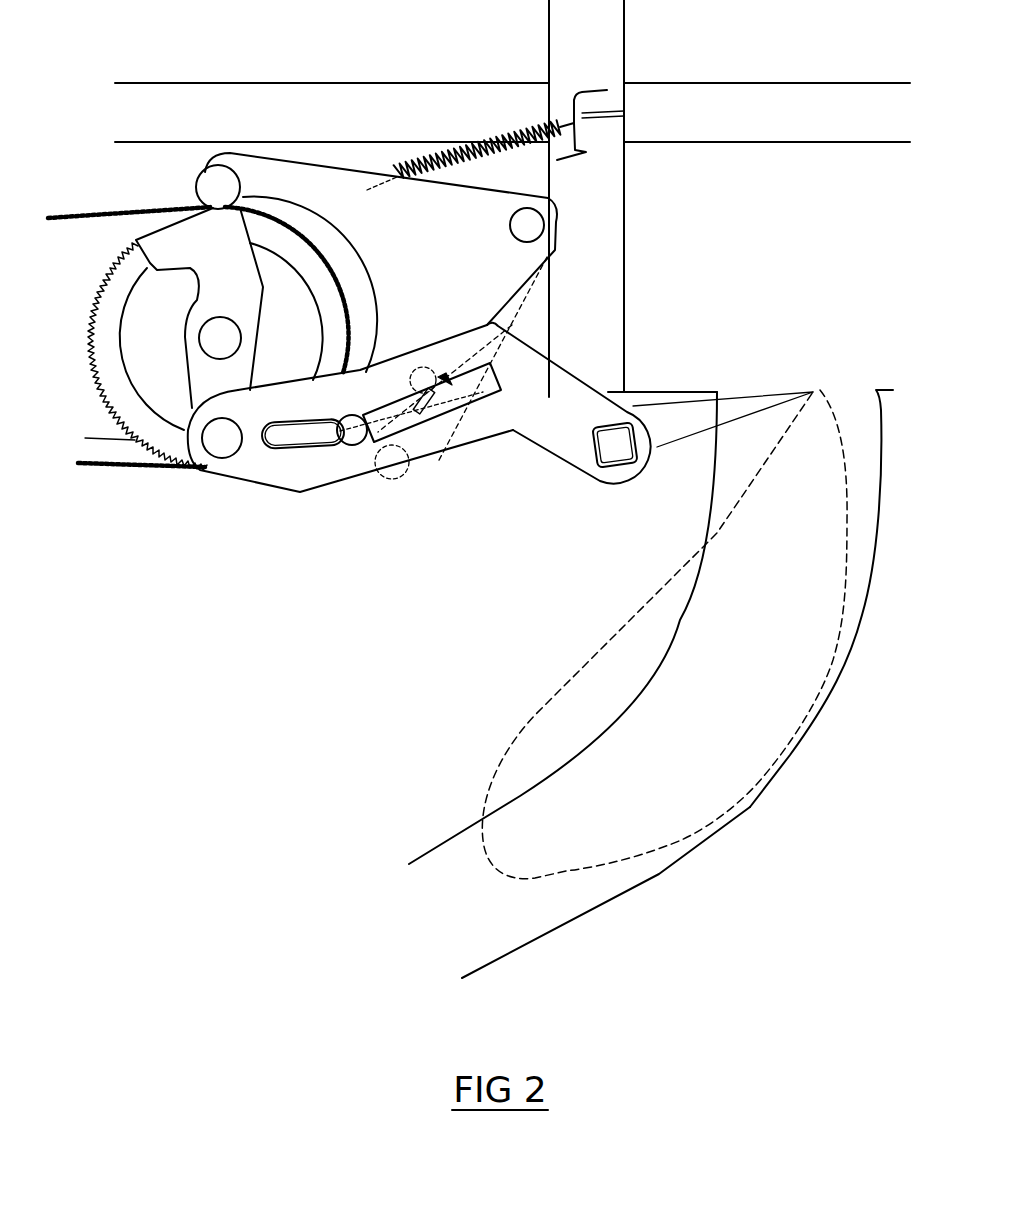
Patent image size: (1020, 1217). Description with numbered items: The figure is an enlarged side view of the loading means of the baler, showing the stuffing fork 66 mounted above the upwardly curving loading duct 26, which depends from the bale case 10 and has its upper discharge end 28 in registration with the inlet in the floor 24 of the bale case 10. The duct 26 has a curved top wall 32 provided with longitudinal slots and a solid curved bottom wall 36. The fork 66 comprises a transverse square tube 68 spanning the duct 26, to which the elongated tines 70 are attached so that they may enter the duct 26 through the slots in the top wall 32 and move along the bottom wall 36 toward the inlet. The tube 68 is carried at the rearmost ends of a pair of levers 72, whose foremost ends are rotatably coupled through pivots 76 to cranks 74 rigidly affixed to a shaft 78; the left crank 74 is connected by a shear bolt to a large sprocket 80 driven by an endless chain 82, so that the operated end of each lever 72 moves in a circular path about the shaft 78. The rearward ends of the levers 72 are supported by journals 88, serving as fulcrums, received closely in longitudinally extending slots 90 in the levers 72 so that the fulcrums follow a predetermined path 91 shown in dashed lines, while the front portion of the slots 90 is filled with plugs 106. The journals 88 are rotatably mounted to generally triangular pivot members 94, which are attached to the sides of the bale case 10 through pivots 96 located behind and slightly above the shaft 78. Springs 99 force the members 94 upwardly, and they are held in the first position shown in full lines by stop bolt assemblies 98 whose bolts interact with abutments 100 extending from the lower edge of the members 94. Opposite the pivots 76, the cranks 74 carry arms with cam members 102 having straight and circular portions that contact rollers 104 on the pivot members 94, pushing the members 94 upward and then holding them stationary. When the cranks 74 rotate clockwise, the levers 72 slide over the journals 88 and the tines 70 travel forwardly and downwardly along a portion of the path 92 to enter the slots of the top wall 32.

The bale case 10 is at (600, 49).
The floor 24 is at (677, 382).
The loading duct 26 is at (584, 897).
The upper discharge end 28 is at (732, 461).
The curved top wall 32 is at (430, 846).
The curved bottom wall 36 is at (768, 778).
The stuffing fork 66 is at (547, 462).
The square tube 68 is at (600, 485).
The tines 70 is at (673, 425).
The levers 72 is at (263, 495).
The cranks 74 is at (210, 283).
The pivots 76 is at (222, 460).
The shaft 78 is at (220, 345).
The large sprocket 80 is at (90, 327).
The endless chain 82 is at (140, 473).
The journals 88 is at (346, 448).
The slots 90 is at (437, 432).
The predetermined path 91 is at (478, 395).
The path 92 is at (559, 872).
The pivot members 94 is at (323, 165).
The pivots 96 is at (545, 220).
The stop bolt assemblies 98 is at (432, 373).
The springs 99 is at (458, 145).
The abutments 100 is at (480, 410).
The cam members 102 is at (250, 238).
The rollers 104 is at (195, 184).
The plugs 106 is at (300, 450).